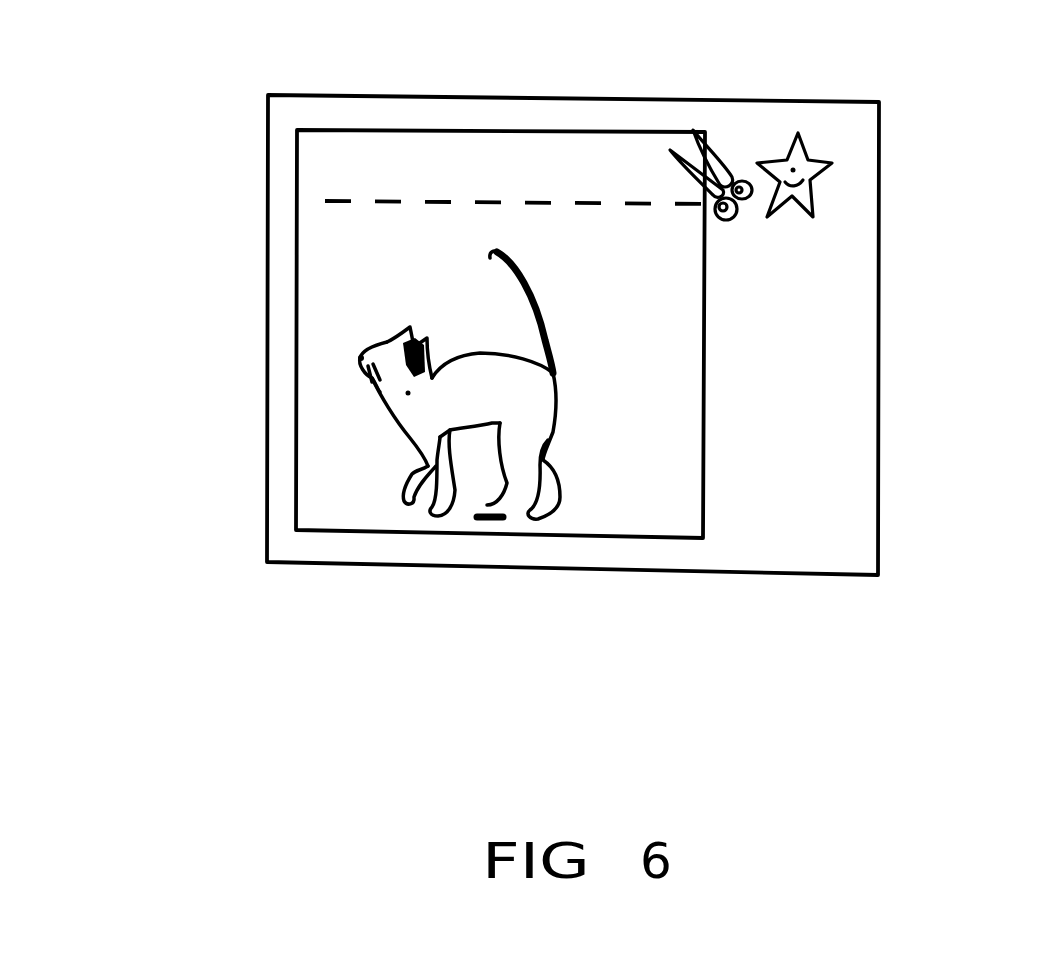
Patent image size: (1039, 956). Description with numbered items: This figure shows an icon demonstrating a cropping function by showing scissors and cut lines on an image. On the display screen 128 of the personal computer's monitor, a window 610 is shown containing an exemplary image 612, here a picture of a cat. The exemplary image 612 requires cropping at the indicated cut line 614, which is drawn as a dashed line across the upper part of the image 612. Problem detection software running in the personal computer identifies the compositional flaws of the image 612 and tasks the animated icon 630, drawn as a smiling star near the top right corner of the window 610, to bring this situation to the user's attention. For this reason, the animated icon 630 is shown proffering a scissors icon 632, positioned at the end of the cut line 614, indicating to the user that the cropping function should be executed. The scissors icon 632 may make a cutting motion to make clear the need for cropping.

The display screen 128 is at (267, 472).
The image display window 610 is at (297, 228).
The exemplary image 612 is at (360, 355).
The cut line 614 is at (333, 198).
The animated icon 630 is at (832, 163).
The scissors icon 632 is at (717, 137).